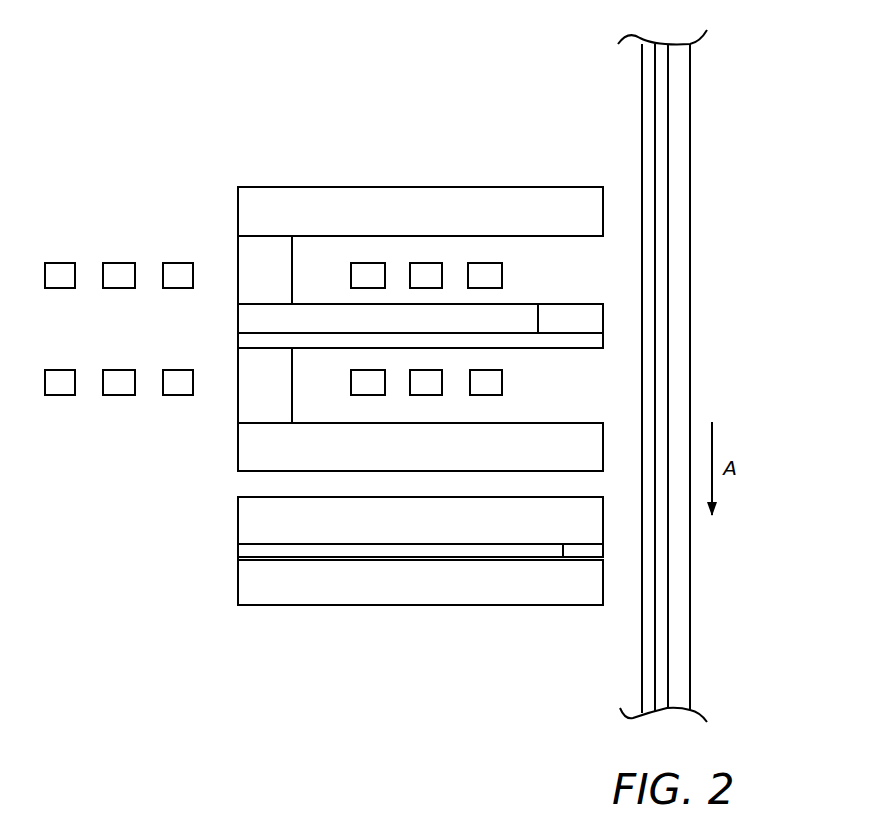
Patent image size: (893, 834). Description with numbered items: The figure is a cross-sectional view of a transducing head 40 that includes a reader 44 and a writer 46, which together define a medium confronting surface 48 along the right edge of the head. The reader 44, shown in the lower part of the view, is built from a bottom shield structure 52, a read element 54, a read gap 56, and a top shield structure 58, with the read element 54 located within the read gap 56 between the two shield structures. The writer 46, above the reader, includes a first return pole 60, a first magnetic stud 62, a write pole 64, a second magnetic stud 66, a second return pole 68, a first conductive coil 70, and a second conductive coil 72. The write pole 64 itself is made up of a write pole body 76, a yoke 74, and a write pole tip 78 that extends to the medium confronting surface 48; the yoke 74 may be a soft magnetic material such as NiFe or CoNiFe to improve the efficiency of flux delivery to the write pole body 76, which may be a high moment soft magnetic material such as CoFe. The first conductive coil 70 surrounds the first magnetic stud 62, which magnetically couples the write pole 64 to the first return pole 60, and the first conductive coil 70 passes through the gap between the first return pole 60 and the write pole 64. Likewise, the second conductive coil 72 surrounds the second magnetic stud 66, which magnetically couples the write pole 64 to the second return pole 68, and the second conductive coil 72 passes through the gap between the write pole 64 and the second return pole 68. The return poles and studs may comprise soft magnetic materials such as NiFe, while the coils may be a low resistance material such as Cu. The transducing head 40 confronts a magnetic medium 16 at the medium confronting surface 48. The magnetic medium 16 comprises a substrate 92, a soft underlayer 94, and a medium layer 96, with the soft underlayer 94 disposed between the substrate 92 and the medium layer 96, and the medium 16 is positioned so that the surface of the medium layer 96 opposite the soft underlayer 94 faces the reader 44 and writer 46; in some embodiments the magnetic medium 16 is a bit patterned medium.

The magnetic medium 16 is at (718, 118).
The transducing head 40 is at (175, 118).
The reader 44 is at (215, 540).
The writer 46 is at (228, 237).
The medium confronting surface 48 is at (613, 203).
The bottom shield structure 52 is at (245, 578).
The read element 54 is at (588, 552).
The read gap 56 is at (240, 550).
The top shield structure 58 is at (240, 508).
The first return pole 60 is at (238, 455).
The first magnetic stud 62 is at (237, 398).
The write pole 64 is at (226, 303).
The second magnetic stud 66 is at (238, 268).
The second return pole 68 is at (255, 205).
The first conductive coil 70 is at (97, 398).
The second conductive coil 72 is at (103, 255).
The yoke 74 is at (350, 313).
The write pole body 76 is at (327, 345).
The write pole tip 78 is at (583, 340).
The substrate 92 is at (680, 192).
The soft underlayer 94 is at (660, 240).
The medium layer 96 is at (648, 292).